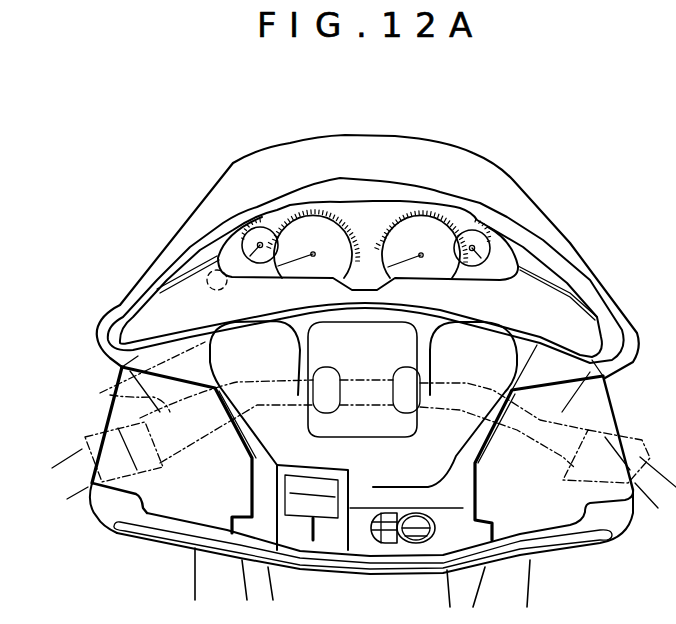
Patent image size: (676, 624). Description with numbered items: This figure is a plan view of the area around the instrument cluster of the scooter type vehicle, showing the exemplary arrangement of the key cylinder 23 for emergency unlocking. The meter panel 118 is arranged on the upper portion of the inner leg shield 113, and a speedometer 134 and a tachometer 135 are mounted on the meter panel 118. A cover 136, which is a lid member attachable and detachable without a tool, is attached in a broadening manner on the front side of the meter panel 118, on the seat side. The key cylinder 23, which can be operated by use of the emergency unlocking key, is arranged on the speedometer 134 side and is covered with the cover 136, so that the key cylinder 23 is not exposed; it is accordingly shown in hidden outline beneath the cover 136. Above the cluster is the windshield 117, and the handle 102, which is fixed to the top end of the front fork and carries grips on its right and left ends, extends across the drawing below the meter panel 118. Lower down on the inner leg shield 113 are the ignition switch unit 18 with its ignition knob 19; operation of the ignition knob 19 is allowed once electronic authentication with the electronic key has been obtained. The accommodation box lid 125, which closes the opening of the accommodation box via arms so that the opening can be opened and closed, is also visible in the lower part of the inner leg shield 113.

The windshield 117 is at (530, 197).
The meter panel 118 is at (540, 265).
The cover 136 is at (160, 310).
The speedometer 134 is at (308, 228).
The tachometer 135 is at (428, 227).
The key cylinder 23 is at (197, 277).
The handle 102 is at (110, 395).
The inner leg shield 113 is at (207, 580).
The accommodation box lid 125 is at (563, 548).
The ignition switch unit 18 is at (393, 540).
The ignition knob 19 is at (413, 540).